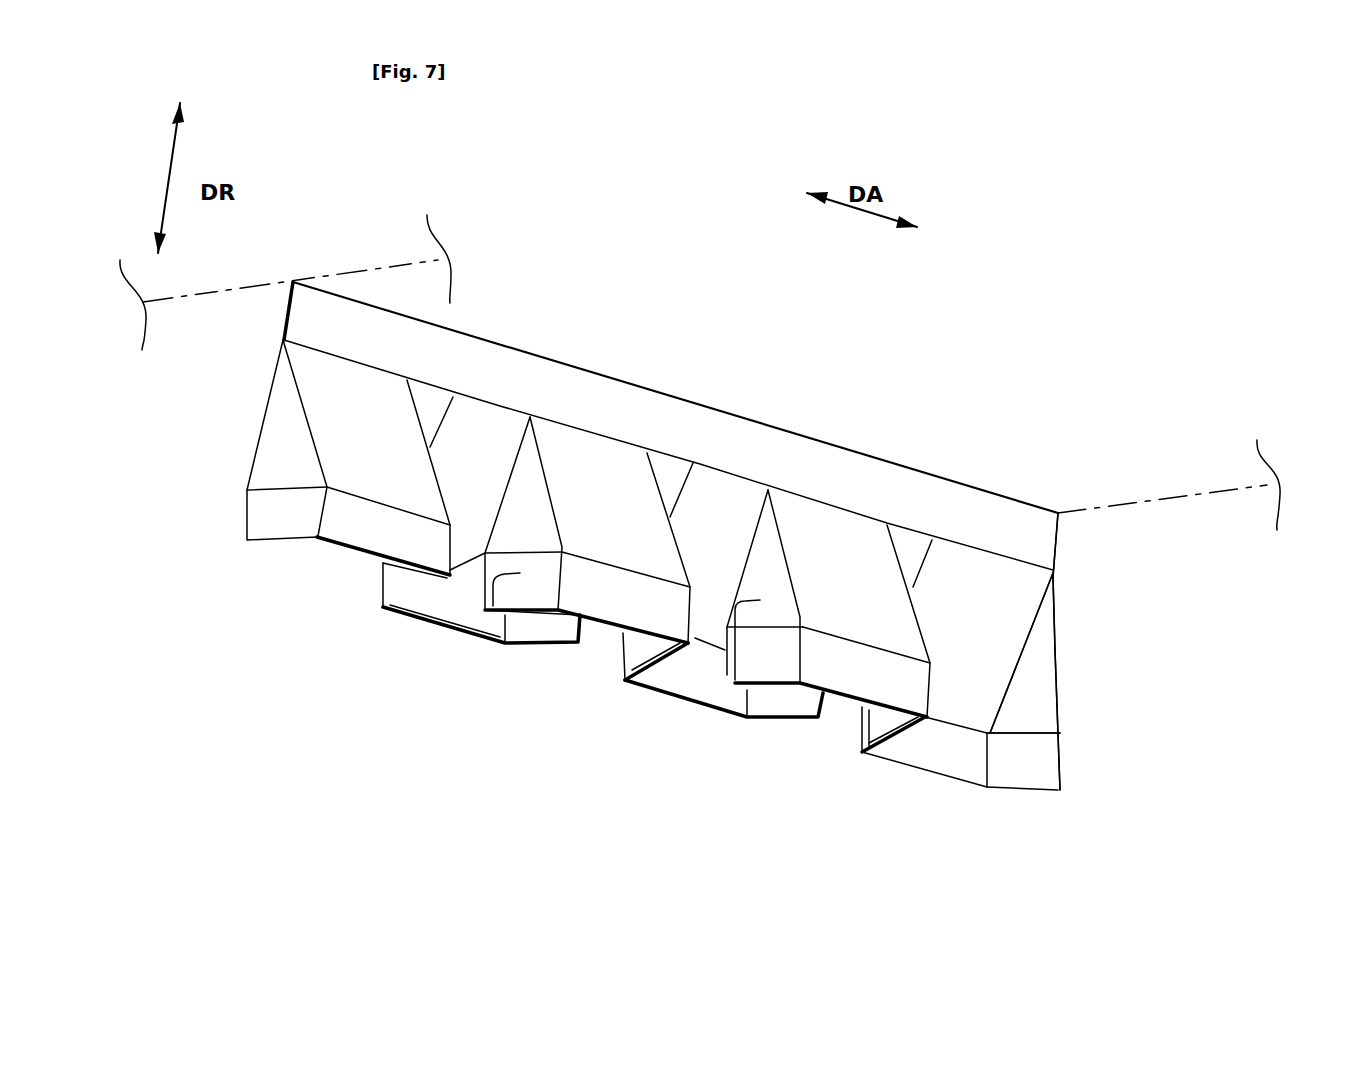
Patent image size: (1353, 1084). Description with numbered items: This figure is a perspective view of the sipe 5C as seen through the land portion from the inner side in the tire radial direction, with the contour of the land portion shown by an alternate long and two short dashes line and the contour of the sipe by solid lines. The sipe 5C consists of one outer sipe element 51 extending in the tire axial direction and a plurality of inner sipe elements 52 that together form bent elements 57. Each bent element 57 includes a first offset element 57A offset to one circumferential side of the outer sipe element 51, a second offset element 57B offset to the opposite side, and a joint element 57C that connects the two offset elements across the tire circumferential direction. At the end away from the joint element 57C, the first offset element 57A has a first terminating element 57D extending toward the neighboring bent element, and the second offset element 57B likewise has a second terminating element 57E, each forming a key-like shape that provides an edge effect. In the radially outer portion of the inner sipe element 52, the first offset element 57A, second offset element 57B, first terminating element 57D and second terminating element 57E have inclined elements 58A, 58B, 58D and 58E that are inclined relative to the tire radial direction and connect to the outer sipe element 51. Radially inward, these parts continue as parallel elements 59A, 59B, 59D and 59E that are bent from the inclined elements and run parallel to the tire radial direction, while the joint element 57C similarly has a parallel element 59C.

The outer sipe element 51 is at (785, 460).
The inner sipe element 52 is at (1067, 703).
The sipe 5C is at (1022, 500).
The bent element 57 is at (923, 770).
The first offset element 57A is at (887, 525).
The second offset element 57B is at (1053, 570).
The joint element 57C is at (880, 723).
The first terminating element 57D is at (737, 692).
The second terminating element 57E is at (1043, 667).
The inclined element 58A is at (605, 500).
The inclined element 58B is at (722, 520).
The inclined element 58D is at (520, 520).
The inclined element 58E is at (1030, 720).
The parallel element 59A is at (610, 600).
The parallel element 59B is at (642, 690).
The parallel element 59C is at (665, 648).
The parallel element 59D is at (510, 580).
The parallel element 59E is at (522, 628).